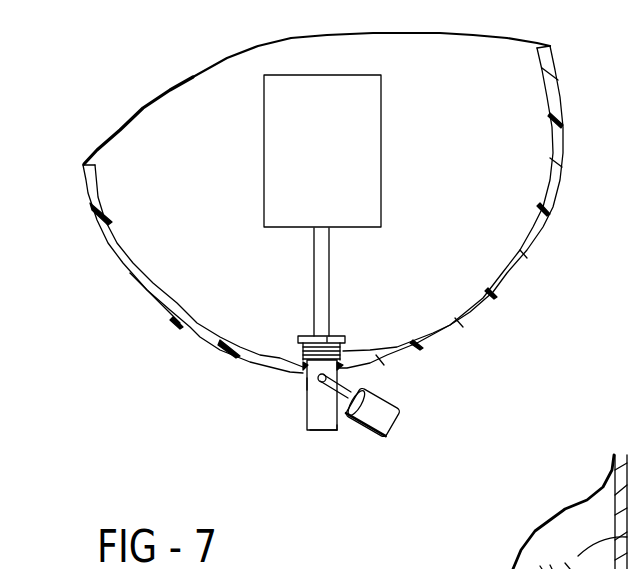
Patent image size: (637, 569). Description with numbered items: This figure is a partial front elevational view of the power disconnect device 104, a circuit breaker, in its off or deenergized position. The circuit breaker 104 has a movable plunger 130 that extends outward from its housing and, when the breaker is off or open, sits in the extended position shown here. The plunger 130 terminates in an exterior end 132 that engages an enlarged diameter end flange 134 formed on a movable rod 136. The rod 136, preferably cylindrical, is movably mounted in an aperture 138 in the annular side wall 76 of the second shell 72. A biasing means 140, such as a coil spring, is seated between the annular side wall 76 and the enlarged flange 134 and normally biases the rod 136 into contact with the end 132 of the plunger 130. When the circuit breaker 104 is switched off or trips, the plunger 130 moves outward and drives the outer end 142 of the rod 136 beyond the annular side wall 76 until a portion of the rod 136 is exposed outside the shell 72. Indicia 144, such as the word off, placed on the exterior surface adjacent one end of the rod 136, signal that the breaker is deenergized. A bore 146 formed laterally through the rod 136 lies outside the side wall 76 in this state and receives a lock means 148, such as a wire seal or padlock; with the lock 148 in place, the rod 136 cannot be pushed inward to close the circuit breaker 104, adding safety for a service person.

The second shell 72 is at (570, 193).
The annular side wall 76 is at (537, 232).
The power disconnect device 104 is at (288, 120).
The plunger 130 is at (313, 256).
The exterior end 132 is at (342, 337).
The enlarged diameter end flange 134 is at (300, 337).
The rod 136 is at (305, 421).
The aperture 138 is at (303, 372).
The biasing means 140 is at (343, 351).
The outer end 142 is at (325, 430).
The indicia 144 is at (340, 430).
The bore 146 is at (305, 385).
The lock means 148 is at (397, 410).